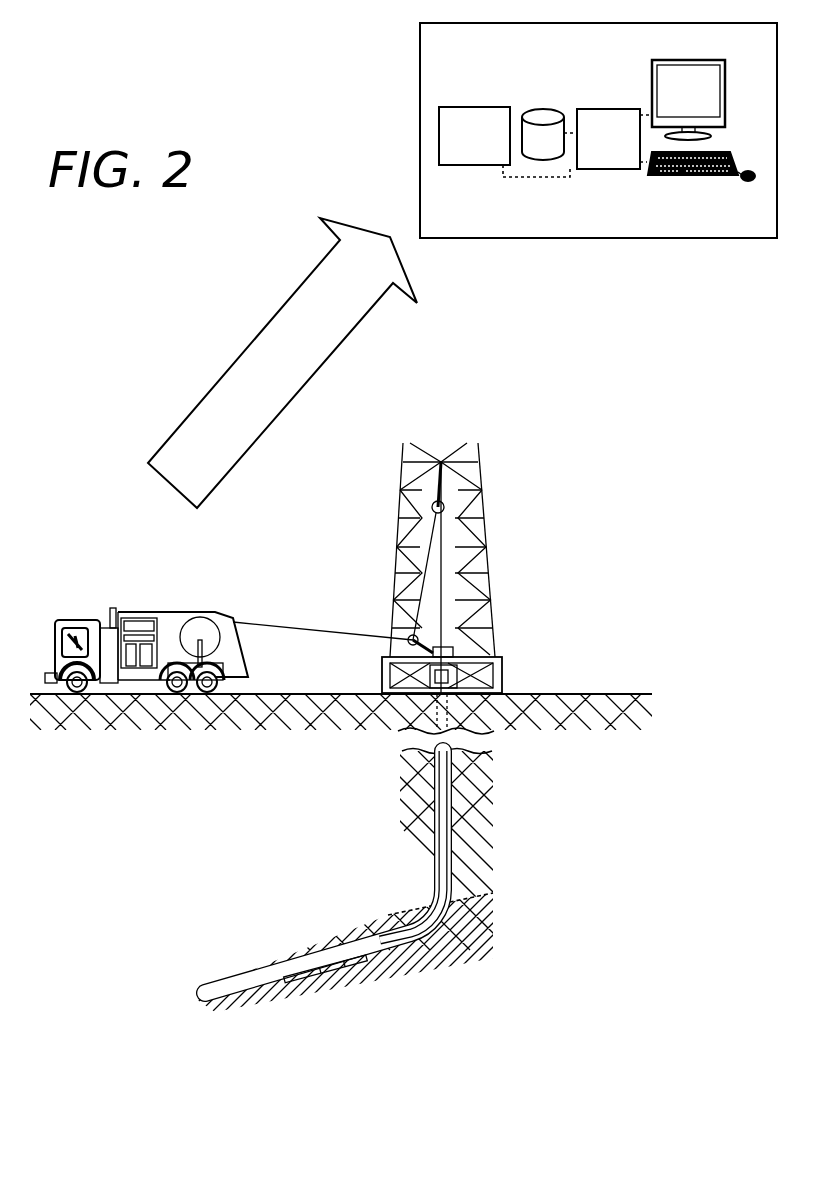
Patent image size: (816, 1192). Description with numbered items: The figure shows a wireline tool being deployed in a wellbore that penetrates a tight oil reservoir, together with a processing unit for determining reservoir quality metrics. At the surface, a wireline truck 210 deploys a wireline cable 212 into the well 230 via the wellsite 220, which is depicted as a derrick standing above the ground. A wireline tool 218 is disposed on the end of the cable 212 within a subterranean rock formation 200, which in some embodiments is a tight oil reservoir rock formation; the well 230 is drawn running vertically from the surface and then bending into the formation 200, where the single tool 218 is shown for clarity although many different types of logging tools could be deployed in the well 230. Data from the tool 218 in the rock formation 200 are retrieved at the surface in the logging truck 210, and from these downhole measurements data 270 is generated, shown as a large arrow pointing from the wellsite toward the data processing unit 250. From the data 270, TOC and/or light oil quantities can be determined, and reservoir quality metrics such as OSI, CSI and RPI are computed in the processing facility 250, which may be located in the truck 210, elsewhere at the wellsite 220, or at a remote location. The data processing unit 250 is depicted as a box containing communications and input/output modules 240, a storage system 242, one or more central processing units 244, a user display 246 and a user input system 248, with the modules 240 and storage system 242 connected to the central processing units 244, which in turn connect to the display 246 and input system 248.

The subterranean rock formation 200 is at (435, 971).
The wireline truck 210 is at (178, 612).
The wireline cable 212 is at (297, 632).
The wireline tool 218 is at (343, 978).
The wellsite 220 is at (530, 647).
The well 230 is at (433, 797).
The communications and input/output modules 240 is at (453, 145).
The storage system 242 is at (552, 114).
The central processing units 244 is at (593, 148).
The user display 246 is at (671, 105).
The user input system 248 is at (740, 142).
The data processing unit 250 is at (718, 228).
The data from borehole measurements 270 is at (328, 306).